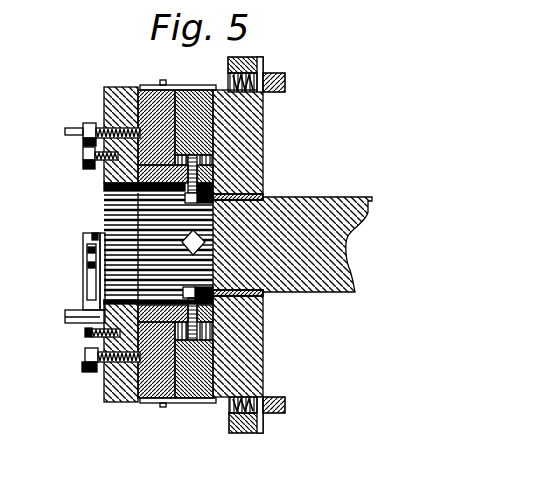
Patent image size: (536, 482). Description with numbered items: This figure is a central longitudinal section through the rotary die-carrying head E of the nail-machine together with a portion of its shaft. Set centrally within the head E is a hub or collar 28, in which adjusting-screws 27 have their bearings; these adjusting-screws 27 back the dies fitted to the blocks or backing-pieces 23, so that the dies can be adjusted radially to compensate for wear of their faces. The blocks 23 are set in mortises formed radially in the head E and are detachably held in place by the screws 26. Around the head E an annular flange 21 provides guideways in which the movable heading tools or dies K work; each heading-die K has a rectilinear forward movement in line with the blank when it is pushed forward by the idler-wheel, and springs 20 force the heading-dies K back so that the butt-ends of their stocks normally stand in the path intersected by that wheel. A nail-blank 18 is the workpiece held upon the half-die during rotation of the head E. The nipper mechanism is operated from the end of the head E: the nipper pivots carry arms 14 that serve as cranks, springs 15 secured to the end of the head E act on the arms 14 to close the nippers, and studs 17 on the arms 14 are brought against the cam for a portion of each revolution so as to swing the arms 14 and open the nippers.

The arms 14 is at (88, 325).
The springs 15 is at (90, 160).
The studs 17 is at (68, 133).
The nail-blank 18 is at (175, 88).
The springs 20 is at (266, 72).
The annular flange 21 is at (265, 60).
The blocks or backing-pieces 23 is at (152, 88).
The screws 26 is at (100, 125).
The adjusting-screws 27 is at (188, 202).
The hub or collar 28 is at (186, 287).
The die-carrying head E is at (104, 88).
The heading tools or dies K is at (227, 80).